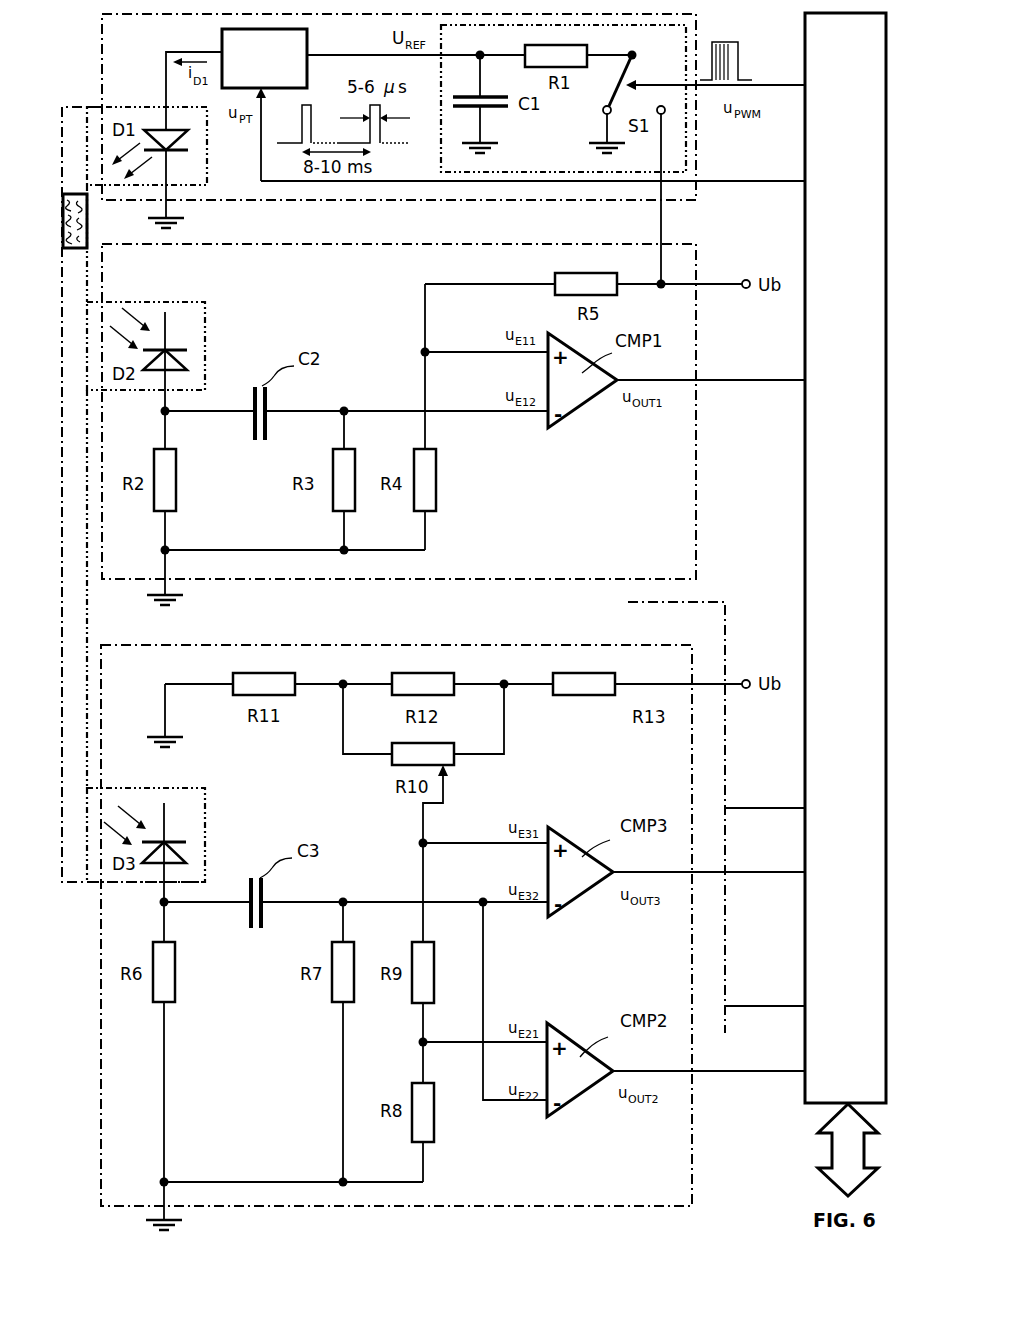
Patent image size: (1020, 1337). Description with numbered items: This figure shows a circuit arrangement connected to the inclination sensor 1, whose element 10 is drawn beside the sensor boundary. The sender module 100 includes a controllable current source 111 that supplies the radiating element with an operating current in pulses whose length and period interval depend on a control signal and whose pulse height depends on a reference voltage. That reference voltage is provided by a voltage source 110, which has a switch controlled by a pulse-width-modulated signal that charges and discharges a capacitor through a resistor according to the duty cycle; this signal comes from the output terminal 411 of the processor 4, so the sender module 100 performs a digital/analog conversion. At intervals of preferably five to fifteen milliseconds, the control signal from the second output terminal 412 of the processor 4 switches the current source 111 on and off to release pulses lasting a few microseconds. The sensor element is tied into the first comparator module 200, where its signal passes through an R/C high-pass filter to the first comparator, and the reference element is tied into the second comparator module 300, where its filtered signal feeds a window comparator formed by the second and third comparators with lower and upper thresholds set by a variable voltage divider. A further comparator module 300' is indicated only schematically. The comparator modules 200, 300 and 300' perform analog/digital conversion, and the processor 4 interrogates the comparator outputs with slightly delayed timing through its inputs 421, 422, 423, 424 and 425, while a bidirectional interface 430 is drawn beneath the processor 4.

The inclination sensor 1 is at (134, 494).
The processor 4 is at (845, 558).
The measuring cell / sensor element 10 is at (88, 229).
The sender module 100 is at (399, 107).
The voltage source 110 is at (563, 98).
The controllable current source 111 is at (264, 58).
The first comparator module 200 is at (399, 411).
The second comparator module 300 is at (396, 925).
The comparator module 300' is at (676, 817).
The output terminal 411 is at (715, 77).
The second output terminal 412 is at (533, 170).
The input 421 is at (711, 368).
The input 422 is at (709, 1058).
The input 423 is at (709, 859).
The input 424 is at (765, 992).
The input 425 is at (765, 794).
The bidirectional data interface 430 is at (834, 1150).